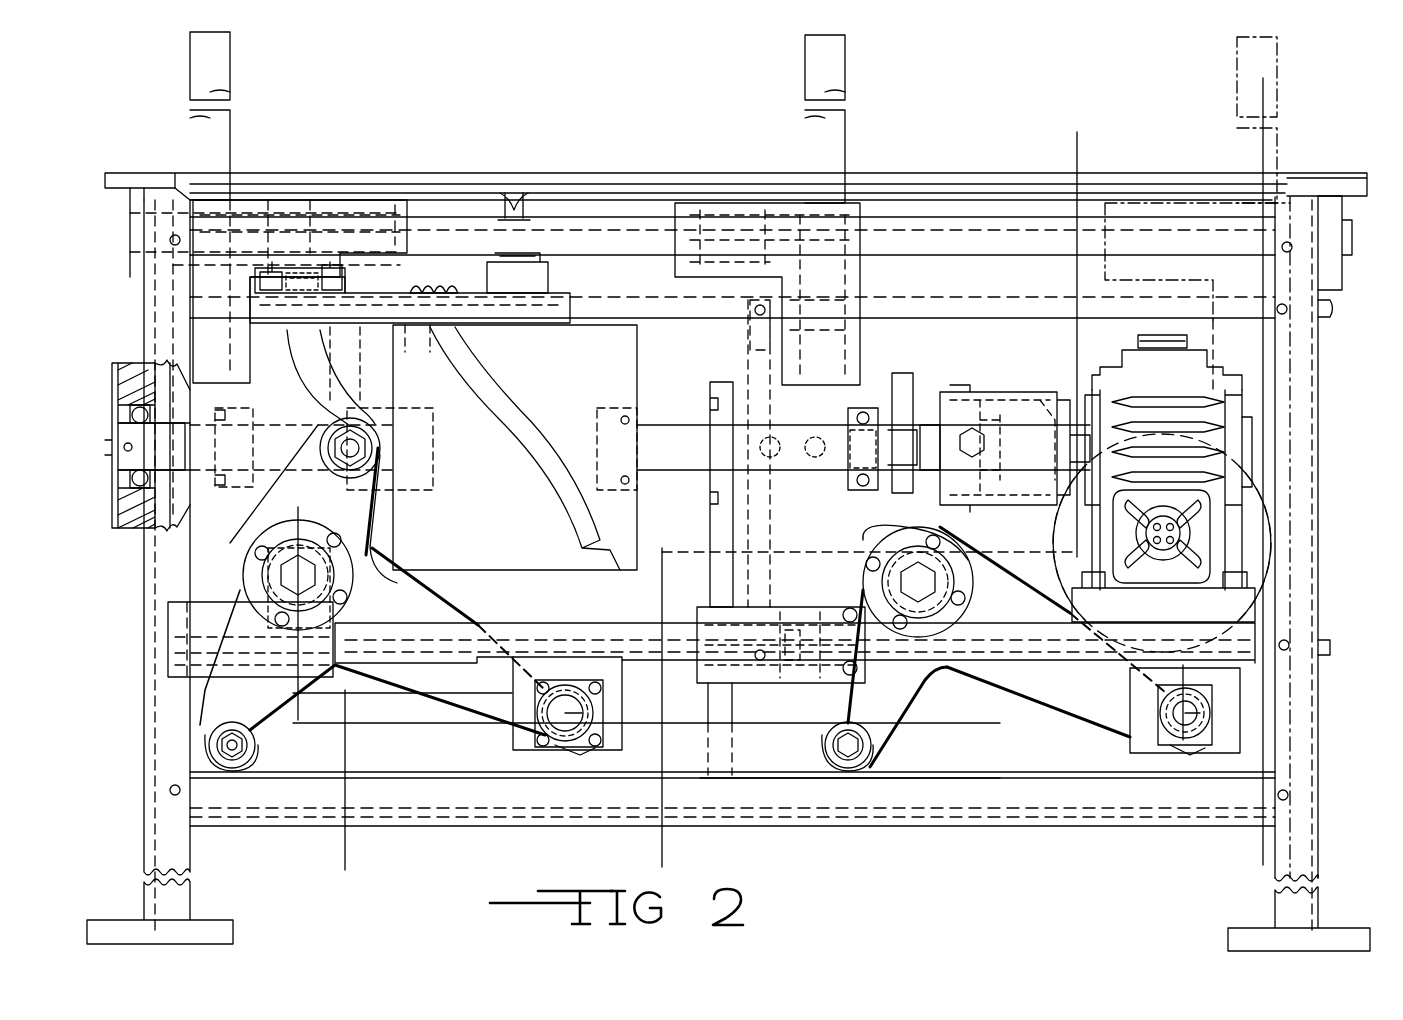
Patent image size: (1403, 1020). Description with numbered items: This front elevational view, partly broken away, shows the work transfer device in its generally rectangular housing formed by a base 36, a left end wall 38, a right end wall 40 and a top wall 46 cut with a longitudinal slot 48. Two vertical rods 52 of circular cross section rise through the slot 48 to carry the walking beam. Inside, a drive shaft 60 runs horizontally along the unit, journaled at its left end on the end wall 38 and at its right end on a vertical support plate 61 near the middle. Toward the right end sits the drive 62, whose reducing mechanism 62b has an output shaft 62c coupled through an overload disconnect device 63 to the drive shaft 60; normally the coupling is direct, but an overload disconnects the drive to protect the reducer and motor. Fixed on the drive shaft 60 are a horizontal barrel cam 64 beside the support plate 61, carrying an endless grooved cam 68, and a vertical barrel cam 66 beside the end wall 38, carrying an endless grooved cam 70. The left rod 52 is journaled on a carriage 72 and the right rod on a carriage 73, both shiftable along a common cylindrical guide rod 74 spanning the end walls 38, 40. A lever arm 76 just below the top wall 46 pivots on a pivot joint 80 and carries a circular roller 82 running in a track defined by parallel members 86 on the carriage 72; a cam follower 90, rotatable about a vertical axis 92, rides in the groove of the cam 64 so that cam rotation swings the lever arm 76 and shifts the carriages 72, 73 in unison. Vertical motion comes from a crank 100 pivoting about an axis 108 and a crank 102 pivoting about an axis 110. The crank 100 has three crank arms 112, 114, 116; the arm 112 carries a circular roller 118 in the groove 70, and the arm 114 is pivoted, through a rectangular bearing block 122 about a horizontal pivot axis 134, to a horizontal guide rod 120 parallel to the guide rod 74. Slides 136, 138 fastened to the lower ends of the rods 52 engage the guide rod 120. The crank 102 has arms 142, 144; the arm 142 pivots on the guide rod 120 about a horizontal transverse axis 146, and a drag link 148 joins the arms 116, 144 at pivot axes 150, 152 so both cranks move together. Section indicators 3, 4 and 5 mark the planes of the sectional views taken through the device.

The section line 3- 3 is at (1222, 92).
The section line 4- 4 is at (1040, 147).
The section line 5- 5 is at (280, 510).
The base 36 is at (472, 828).
The end wall 38 is at (150, 533).
The end wall 40 is at (1320, 608).
The top wall 46 is at (572, 177).
The longitudinal slot 48 is at (595, 187).
The vertical rods 52 is at (230, 130).
The drive shaft 60 is at (650, 420).
The vertical support plate 61 is at (725, 382).
The drive 62 is at (1243, 372).
The reducing mechanism 62b is at (1245, 447).
The output shaft 62c is at (1045, 412).
The overload disconnect device 63 is at (975, 393).
The barrel cam 64 is at (637, 330).
The barrel cam 66 is at (385, 352).
The endless grooved cam 68 is at (470, 405).
The endless grooved cam 70 is at (305, 375).
The carriage 72 is at (340, 200).
The carriage 73 is at (720, 203).
The guide rod 74 is at (925, 220).
The lever arm 76 is at (470, 290).
The pivot joint 80 is at (598, 271).
The circular roller 82 is at (290, 292).
The parallel members 86 is at (340, 270).
The cam follower 90 is at (455, 328).
The vertical axis 92 is at (425, 268).
The crank 100 is at (468, 599).
The crank 102 is at (1028, 690).
The axis 108 is at (338, 592).
The axis 110 is at (930, 548).
The crank arm 112 is at (360, 518).
The crank arm 114 is at (470, 697).
The crank arm 116 is at (262, 705).
The circular roller 118 is at (405, 485).
The guide rod 120 is at (592, 627).
The bearing block 122 is at (625, 702).
The horizontal pivot axis 134 is at (600, 735).
The slide 136 is at (205, 693).
The slide 138 is at (697, 607).
The crank arm 142 is at (1075, 700).
The crank arm 144 is at (900, 700).
The horizontal transverse pivot axis 146 is at (1200, 730).
The drag link 148 is at (800, 780).
The pivot axis 150 is at (240, 757).
The pivot axis 152 is at (872, 772).